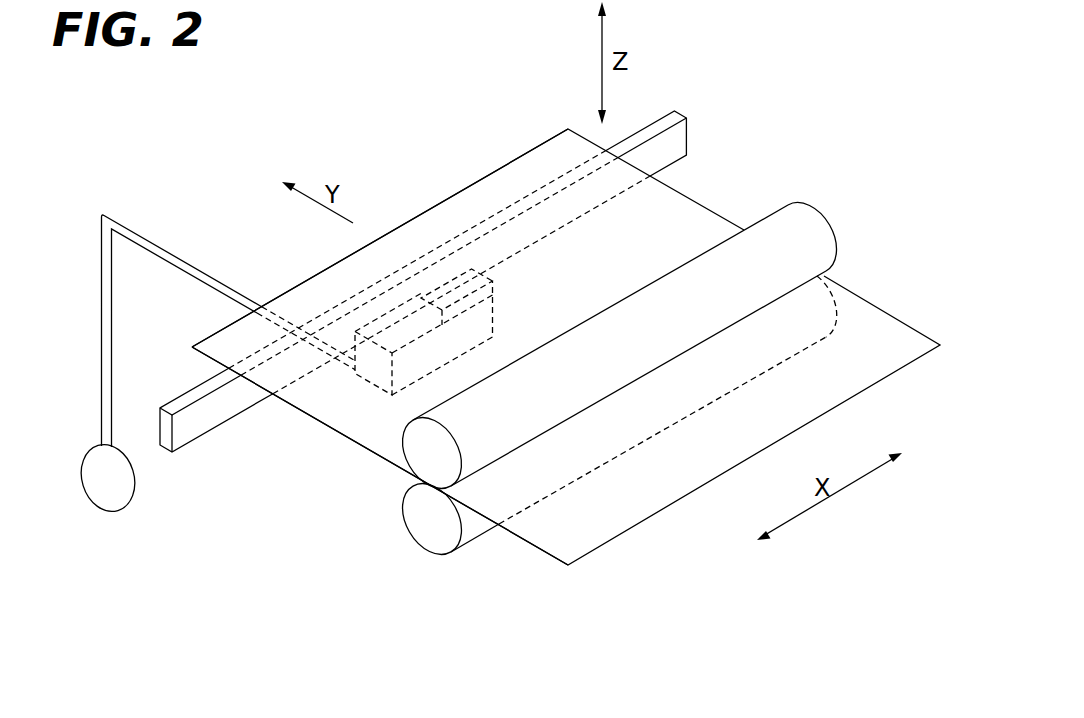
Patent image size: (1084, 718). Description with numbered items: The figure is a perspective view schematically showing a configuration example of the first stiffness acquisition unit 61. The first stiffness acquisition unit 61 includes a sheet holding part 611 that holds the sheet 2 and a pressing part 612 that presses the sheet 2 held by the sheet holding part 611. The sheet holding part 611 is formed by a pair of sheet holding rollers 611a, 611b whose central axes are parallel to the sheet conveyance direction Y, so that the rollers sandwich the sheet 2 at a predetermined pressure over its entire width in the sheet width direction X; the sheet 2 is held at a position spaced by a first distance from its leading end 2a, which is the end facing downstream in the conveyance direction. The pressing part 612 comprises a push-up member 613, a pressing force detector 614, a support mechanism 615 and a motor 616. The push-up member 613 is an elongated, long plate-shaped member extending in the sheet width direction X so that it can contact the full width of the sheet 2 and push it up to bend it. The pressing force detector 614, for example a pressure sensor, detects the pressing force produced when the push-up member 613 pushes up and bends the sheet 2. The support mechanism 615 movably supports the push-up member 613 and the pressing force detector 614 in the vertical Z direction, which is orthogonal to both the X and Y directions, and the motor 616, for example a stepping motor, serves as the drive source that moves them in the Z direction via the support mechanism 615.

The first stiffness acquisition unit 61 is at (273, 101).
The sheet 2 is at (908, 323).
The leading end 2a is at (476, 168).
The sheet holding part 611 is at (621, 405).
The sheet holding roller 611a is at (808, 200).
The sheet holding roller 611b is at (480, 537).
The pressing part 612 is at (276, 496).
The push-up member 613 is at (675, 110).
The pressing force detector 614 is at (378, 388).
The support mechanism 615 is at (147, 240).
The motor 616 is at (113, 512).